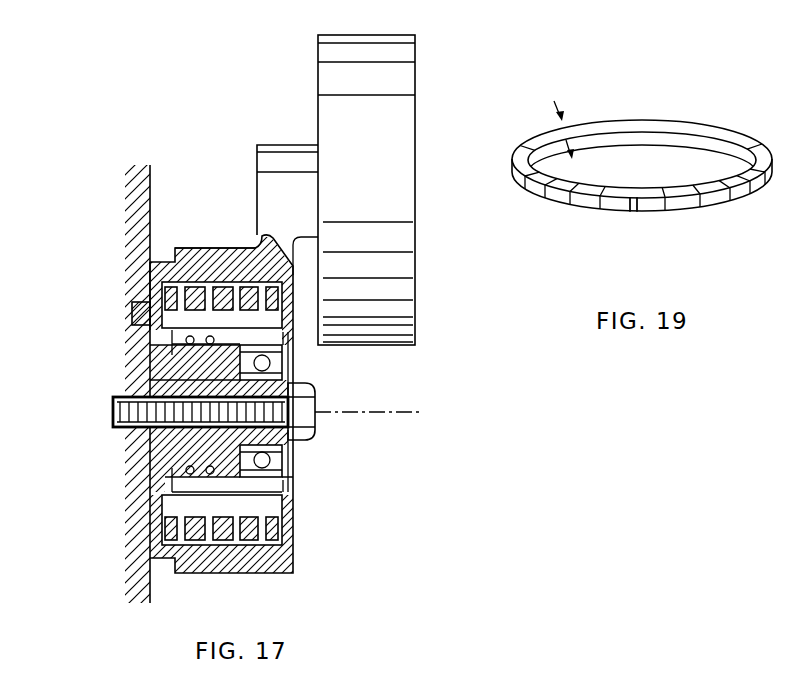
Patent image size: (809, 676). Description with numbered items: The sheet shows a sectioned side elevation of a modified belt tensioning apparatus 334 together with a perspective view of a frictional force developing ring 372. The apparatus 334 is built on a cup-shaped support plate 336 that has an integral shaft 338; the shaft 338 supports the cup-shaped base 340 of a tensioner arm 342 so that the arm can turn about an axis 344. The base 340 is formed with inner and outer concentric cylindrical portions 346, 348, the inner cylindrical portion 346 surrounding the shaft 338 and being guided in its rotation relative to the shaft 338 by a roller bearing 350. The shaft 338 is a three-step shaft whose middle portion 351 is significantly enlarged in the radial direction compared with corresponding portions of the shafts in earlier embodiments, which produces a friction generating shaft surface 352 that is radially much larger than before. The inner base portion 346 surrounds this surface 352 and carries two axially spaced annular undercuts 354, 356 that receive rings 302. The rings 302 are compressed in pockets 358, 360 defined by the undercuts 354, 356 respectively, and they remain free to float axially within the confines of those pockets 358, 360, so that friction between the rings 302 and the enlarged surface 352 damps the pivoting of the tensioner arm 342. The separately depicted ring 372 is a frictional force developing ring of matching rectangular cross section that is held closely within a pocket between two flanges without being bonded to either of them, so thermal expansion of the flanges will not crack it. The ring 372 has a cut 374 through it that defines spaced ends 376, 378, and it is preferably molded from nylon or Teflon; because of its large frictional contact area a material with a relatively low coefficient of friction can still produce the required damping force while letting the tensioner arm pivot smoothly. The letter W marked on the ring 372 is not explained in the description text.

In FIG. 17, the belt tensioning apparatus 334 is at (445, 92).
In FIG. 17, the tensioner arm 342 is at (285, 155).
In FIG. 17, the cup-shaped base 340 is at (242, 262).
In FIG. 17, the outer cylindrical portion 348 is at (198, 262).
In FIG. 17, the rings 302 is at (238, 335).
In FIG. 17, the pocket 358 is at (145, 292).
In FIG. 17, the inner cylindrical portion 346 is at (135, 305).
In FIG. 17, the pocket 360 is at (172, 356).
In FIG. 17, the middle portion 351 is at (165, 385).
In FIG. 17, the cup-shaped support plate 336 is at (150, 395).
In FIG. 17, the shaft 338 is at (128, 407).
In FIG. 17, the axis 344 is at (343, 411).
In FIG. 17, the annular undercut 354 is at (165, 458).
In FIG. 17, the annular undercut 356 is at (165, 478).
In FIG. 17, the friction generating shaft surface 352 is at (172, 493).
In FIG. 17, the roller bearing 350 is at (295, 452).
In FIG. 19, the frictional force developing ring 372 is at (733, 128).
In FIG. 19, the cut 374 is at (634, 213).
In FIG. 19, the end 376 is at (640, 196).
In FIG. 19, the end 378 is at (646, 196).
In FIG. 19, the width W is at (558, 117).